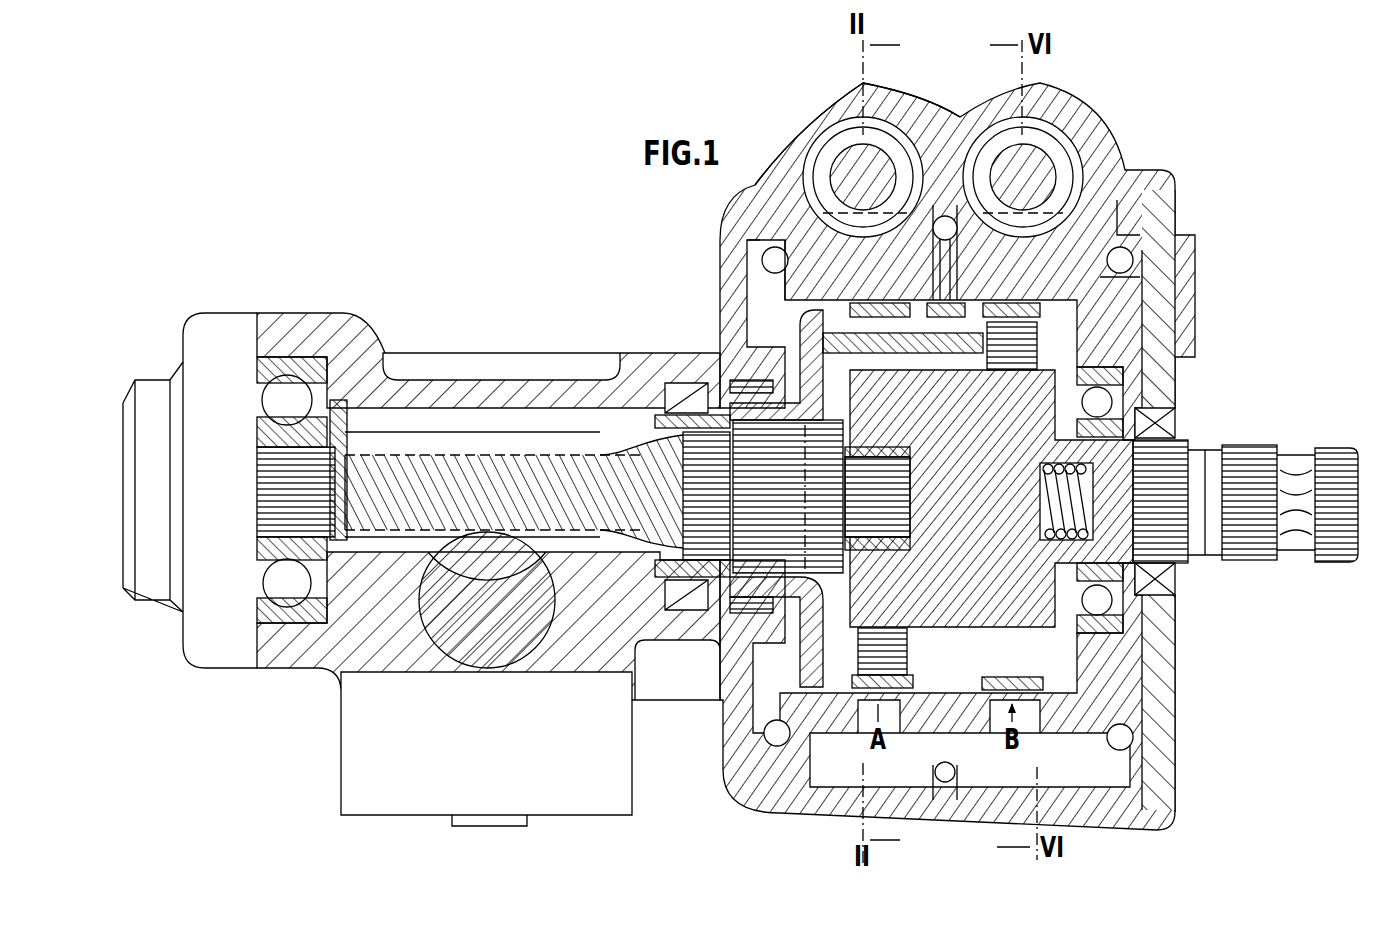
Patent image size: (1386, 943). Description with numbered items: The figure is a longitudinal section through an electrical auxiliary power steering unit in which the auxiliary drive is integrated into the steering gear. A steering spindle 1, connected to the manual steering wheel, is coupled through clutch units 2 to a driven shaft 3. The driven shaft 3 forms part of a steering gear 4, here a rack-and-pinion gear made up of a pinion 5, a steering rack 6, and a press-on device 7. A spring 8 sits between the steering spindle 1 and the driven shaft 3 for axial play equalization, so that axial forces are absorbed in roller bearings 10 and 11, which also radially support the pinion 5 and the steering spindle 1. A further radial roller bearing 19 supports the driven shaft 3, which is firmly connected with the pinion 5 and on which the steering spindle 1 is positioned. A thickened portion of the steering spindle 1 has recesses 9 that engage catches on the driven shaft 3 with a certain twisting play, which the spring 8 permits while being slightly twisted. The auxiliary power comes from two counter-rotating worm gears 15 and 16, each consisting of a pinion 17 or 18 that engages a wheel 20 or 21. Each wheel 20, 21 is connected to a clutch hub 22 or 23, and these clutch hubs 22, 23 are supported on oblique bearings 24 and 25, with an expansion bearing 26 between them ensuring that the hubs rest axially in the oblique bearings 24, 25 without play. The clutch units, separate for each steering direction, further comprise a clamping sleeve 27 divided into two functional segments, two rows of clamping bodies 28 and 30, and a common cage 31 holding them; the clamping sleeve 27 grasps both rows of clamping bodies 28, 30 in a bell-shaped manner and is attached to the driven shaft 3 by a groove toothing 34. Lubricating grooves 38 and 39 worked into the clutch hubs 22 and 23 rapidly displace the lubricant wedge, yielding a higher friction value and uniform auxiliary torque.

The steering spindle 1 is at (1335, 465).
The clutch units 2 is at (1060, 310).
The driven shaft 3 is at (700, 585).
The steering gear 4 is at (490, 345).
The pinion 5 is at (540, 485).
The steering rack 6 is at (510, 610).
The press-on device 7 is at (335, 766).
The spring 8 is at (1090, 500).
The recesses 9 is at (828, 580).
The roller bearing 10 is at (290, 395).
The roller bearing 11 is at (1105, 385).
The worm gear 15 is at (826, 86).
The worm gear 16 is at (1062, 83).
The pinion 17 is at (885, 145).
The pinion 18 is at (1065, 160).
The radial roller bearing 19 is at (745, 385).
The wheel 20 is at (790, 258).
The wheel 21 is at (1129, 228).
The clutch hub 22 is at (762, 259).
The clutch hub 23 is at (1105, 272).
The oblique bearing 24 is at (760, 225).
The oblique bearing 25 is at (1124, 248).
The expansion bearing 26 is at (947, 216).
The clamping sleeve 27 is at (835, 318).
The clamping bodies 28 is at (845, 672).
The clamping bodies 30 is at (1022, 345).
The common cage 31 is at (1050, 662).
The groove toothing 34 is at (700, 405).
The lubricating groove 38 is at (870, 285).
The lubricating groove 39 is at (1018, 280).